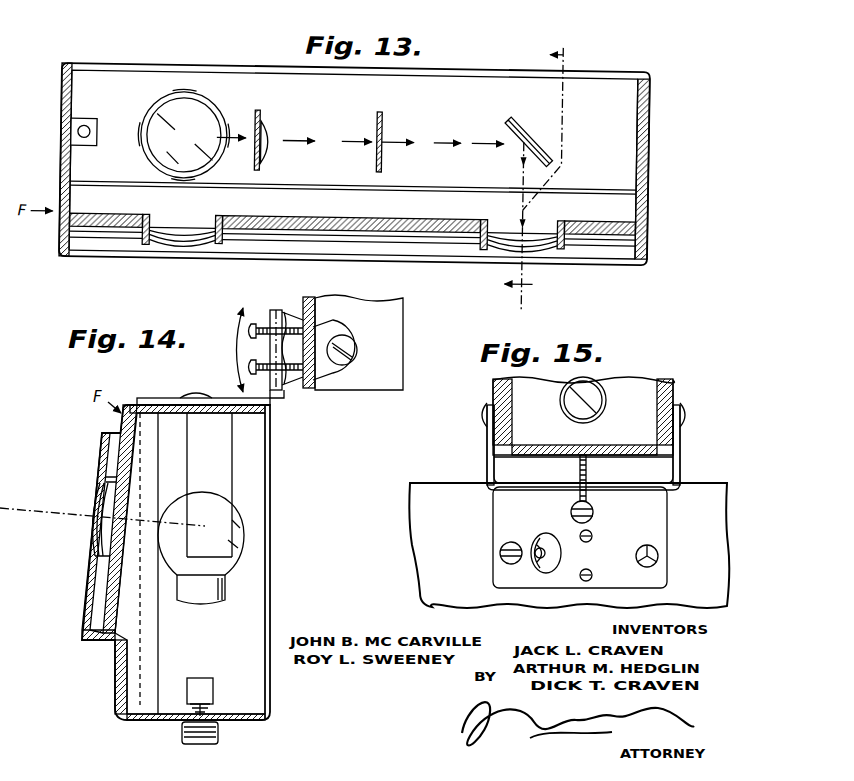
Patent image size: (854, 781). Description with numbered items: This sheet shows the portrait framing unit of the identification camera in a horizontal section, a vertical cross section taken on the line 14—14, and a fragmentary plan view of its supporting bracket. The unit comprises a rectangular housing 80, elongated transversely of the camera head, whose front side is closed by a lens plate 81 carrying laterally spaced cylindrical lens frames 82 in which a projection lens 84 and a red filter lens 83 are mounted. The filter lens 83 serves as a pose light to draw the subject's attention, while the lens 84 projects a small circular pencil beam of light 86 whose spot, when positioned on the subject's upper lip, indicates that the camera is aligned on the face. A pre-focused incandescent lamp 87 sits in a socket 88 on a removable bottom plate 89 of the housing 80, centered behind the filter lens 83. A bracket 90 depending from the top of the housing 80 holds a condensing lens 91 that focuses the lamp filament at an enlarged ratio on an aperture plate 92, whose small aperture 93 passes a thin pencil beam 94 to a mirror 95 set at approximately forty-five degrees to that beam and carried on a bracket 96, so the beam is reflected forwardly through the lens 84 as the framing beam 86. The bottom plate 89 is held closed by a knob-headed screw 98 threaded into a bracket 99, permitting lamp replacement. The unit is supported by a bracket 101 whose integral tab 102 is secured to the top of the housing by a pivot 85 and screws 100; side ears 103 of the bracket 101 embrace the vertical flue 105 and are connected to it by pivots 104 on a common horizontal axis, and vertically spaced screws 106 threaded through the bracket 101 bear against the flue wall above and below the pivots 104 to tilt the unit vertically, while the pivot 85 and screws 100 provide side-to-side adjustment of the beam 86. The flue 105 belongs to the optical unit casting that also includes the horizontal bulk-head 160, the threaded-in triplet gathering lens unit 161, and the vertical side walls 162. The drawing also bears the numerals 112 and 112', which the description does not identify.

In FIG. 13, the section line 14— 14 is at (524, 170).
In FIG. 13, the rectangular housing 80 is at (212, 64).
In FIG. 14, the rectangular housing 80 is at (272, 626).
In FIG. 15, the rectangular housing 80 is at (434, 482).
In FIG. 13, the lens plate 81 is at (442, 202).
In FIG. 14, the lens plate 81 is at (116, 665).
In FIG. 13, the cylindrical lens frames 82 is at (146, 245).
In FIG. 14, the cylindrical lens frames 82 is at (90, 560).
In FIG. 13, the red filter lens 83 is at (215, 243).
In FIG. 13, the projection lens 84 is at (555, 243).
In FIG. 14, the projection lens 84 is at (104, 491).
In FIG. 15, the pivot 85 is at (546, 534).
In FIG. 13, the pencil beam of light 86 is at (522, 292).
In FIG. 14, the pencil beam of light 86 is at (42, 512).
In FIG. 13, the incandescent lamp 87 is at (183, 134).
In FIG. 14, the incandescent lamp 87 is at (236, 530).
In FIG. 13, the socket 88 is at (208, 100).
In FIG. 13, the removable bottom plate 89 is at (74, 158).
In FIG. 14, the removable bottom plate 89 is at (226, 724).
In FIG. 13, the bracket 90 is at (263, 108).
In FIG. 13, the condensing lens 91 is at (271, 130).
In FIG. 13, the aperture plate 92 is at (384, 110).
In FIG. 13, the aperture 93 is at (384, 143).
In FIG. 13, the thin pencil beam of light 94 is at (453, 132).
In FIG. 13, the mirror 95 is at (512, 126).
In FIG. 13, the bracket 96 is at (533, 112).
In FIG. 13, the knob-headed screw 98 is at (86, 124).
In FIG. 14, the knob-headed screw 98 is at (182, 735).
In FIG. 13, the bracket 99 is at (96, 118).
In FIG. 14, the bracket 99 is at (212, 708).
In FIG. 14, the screws 100 is at (182, 397).
In FIG. 15, the screws 100 is at (594, 512).
In FIG. 14, the bracket 101 is at (283, 390).
In FIG. 15, the bracket 101 is at (644, 468).
In FIG. 14, the integral tab 102 is at (218, 397).
In FIG. 15, the integral tab 102 is at (502, 518).
In FIG. 14, the ears 103 is at (326, 378).
In FIG. 15, the ears 103 is at (490, 447).
In FIG. 14, the pivots 104 is at (357, 348).
In FIG. 15, the pivots 104 is at (482, 416).
In FIG. 14, the vertical flue 105 is at (366, 390).
In FIG. 14, the screws 106 is at (251, 366).
In FIG. 15, the screws 106 is at (580, 468).
In FIG. 14, the side wall 112 is at (295, 333).
In FIG. 15, the bottom wall 112' is at (584, 436).
In FIG. 15, the horizontal bulk-head 160 is at (652, 380).
In FIG. 15, the triplet gathering lens unit 161 is at (590, 384).
In FIG. 14, the vertical side walls 162 is at (372, 306).
In FIG. 15, the vertical side walls 162 is at (496, 390).